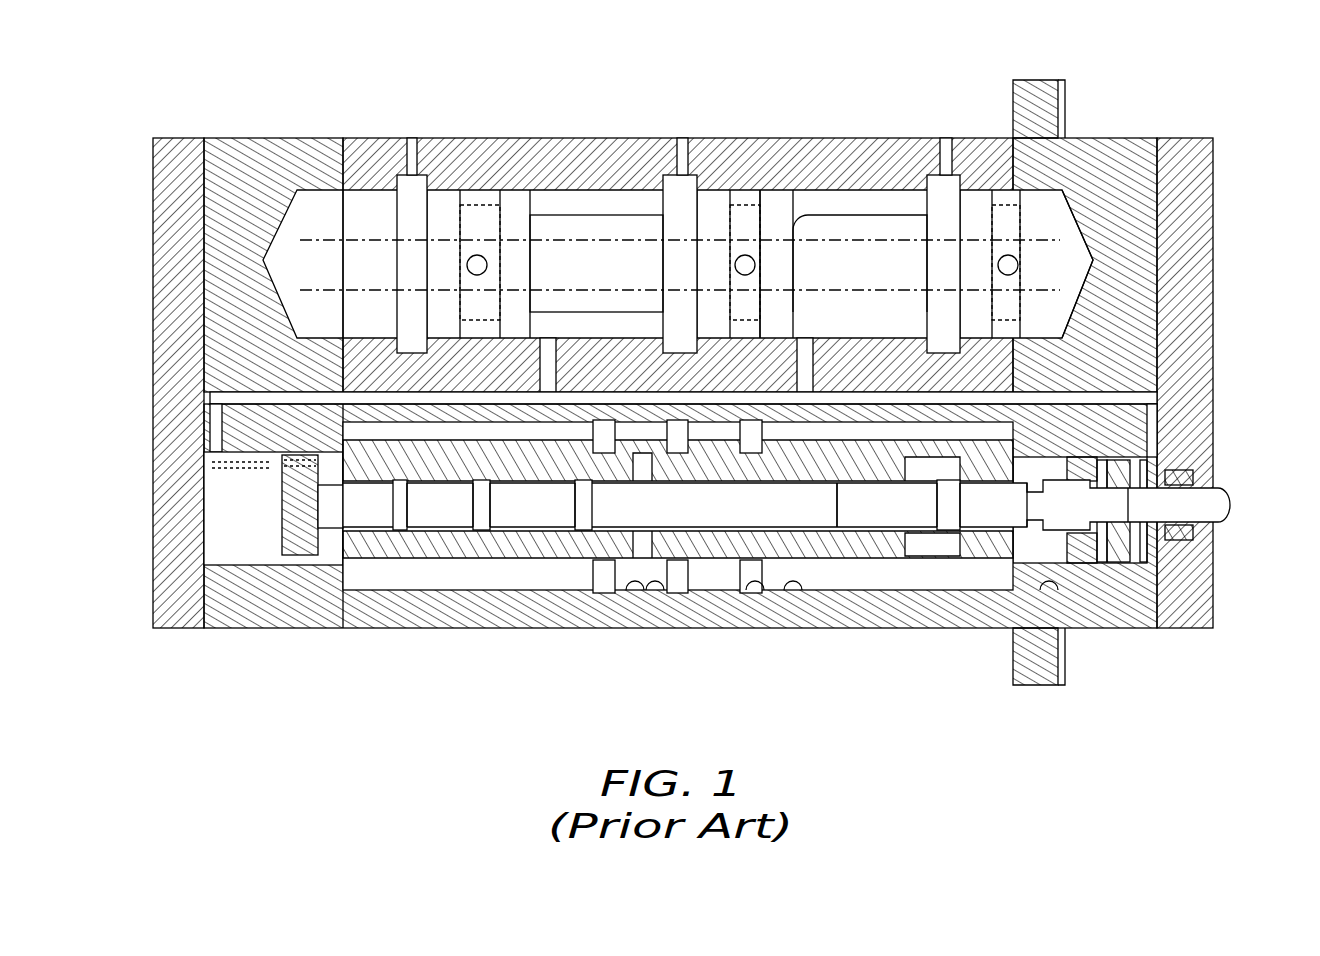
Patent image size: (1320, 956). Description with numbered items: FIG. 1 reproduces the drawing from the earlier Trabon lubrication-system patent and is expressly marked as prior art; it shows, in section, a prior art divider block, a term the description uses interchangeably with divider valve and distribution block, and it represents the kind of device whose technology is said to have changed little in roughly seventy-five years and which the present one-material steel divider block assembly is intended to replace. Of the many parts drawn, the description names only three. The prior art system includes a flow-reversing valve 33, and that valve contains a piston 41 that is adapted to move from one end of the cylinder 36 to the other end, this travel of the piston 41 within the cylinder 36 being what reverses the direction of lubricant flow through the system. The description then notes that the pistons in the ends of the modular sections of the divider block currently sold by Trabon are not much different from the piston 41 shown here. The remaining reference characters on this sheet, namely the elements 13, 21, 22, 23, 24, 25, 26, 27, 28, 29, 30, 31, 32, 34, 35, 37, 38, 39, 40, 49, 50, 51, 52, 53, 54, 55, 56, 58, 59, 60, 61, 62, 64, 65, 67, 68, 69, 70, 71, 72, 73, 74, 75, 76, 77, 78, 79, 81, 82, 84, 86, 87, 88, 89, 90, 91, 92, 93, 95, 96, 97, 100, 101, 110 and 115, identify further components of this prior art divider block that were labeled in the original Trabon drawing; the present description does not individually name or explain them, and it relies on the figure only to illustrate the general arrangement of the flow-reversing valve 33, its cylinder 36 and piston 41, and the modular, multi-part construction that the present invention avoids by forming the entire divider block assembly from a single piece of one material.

The valve assembly 13 is at (283, 135).
The spool 21 is at (505, 195).
The spool shaft 22 is at (797, 200).
The housing block 23 is at (250, 138).
The housing block 24 is at (1125, 138).
The left end cap 25 is at (163, 138).
The right end cap 26 is at (1185, 138).
The port 27 is at (672, 590).
The seal ring 28 is at (410, 138).
The seal ring 29 is at (946, 138).
The passage 30 is at (545, 590).
The passage 31 is at (830, 590).
The seal ring 32 is at (680, 138).
The flow-reversing valve 33 is at (790, 195).
The passage 34 is at (700, 590).
The passage 35 is at (578, 595).
The cylinder 36 is at (553, 190).
The land 37 is at (905, 195).
The land 38 is at (338, 190).
The conical end 39 is at (1070, 250).
The groove 40 is at (405, 352).
The piston 41 is at (508, 192).
The cross hole 49 is at (470, 262).
The axis 50 is at (872, 245).
The passage 51 is at (870, 590).
The port 52 is at (815, 590).
The passage 53 is at (325, 345).
The passage 54 is at (720, 392).
The port 55 is at (628, 595).
The port 56 is at (730, 595).
The passage 58 is at (565, 628).
The port 59 is at (760, 595).
The pin 60 is at (615, 432).
The pin 61 is at (735, 432).
The rod section 62 is at (603, 518).
The rod section 64 is at (517, 518).
The rod section 65 is at (845, 518).
The chamber 67 is at (915, 490).
The chamber 68 is at (470, 590).
The chamber 69 is at (955, 628).
The rod section 70 is at (425, 518).
The rod section 71 is at (965, 518).
The sleeve 72 is at (345, 565).
The housing end 73 is at (1070, 628).
The sleeve upper wall 74 is at (500, 468).
The sleeve block 75 is at (1050, 480).
The sleeve block 76 is at (400, 470).
The sleeve block 77 is at (1075, 480).
The sleeve lower wall 78 is at (440, 590).
The sleeve portion 79 is at (920, 628).
The seal 81 is at (420, 560).
The seal 82 is at (515, 590).
The piston 84 is at (322, 508).
The seal 86 is at (330, 565).
The housing wall 87 is at (310, 446).
The cavity 88 is at (236, 565).
The piston 89 is at (1095, 628).
The spring seat 90 is at (300, 562).
The bushing 91 is at (1130, 628).
The passage 92 is at (556, 342).
The passage 93 is at (813, 345).
The seal 95 is at (940, 590).
The passage 96 is at (380, 400).
The passage 97 is at (980, 628).
The port 100 is at (432, 138).
The chamber 101 is at (445, 590).
The actuator piston 110 is at (276, 530).
The seal 115 is at (365, 560).